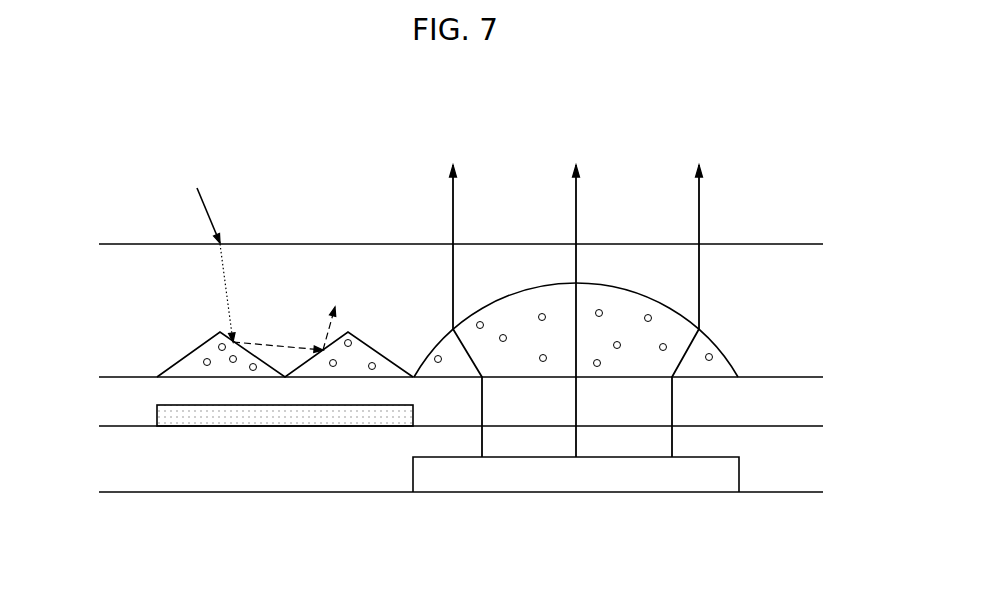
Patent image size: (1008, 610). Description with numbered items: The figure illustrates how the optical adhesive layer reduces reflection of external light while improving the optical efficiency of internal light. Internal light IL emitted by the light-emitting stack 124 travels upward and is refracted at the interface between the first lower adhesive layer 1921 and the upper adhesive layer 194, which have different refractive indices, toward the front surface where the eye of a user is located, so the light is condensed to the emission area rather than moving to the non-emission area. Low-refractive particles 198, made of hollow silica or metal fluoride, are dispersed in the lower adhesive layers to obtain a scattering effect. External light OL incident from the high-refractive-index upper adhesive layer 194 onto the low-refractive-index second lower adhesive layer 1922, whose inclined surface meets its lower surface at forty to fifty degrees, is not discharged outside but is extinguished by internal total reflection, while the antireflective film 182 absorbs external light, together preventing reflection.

The upper adhesive layer 194 is at (788, 253).
The second lower adhesive layer 1922 is at (185, 363).
The low-refractive particle 198 is at (712, 353).
The first lower adhesive layer 1921 is at (725, 365).
The antireflective film 182 is at (275, 417).
The light-emitting stack 124 is at (596, 485).
The internal light IL is at (461, 441).
The external light OL is at (260, 258).